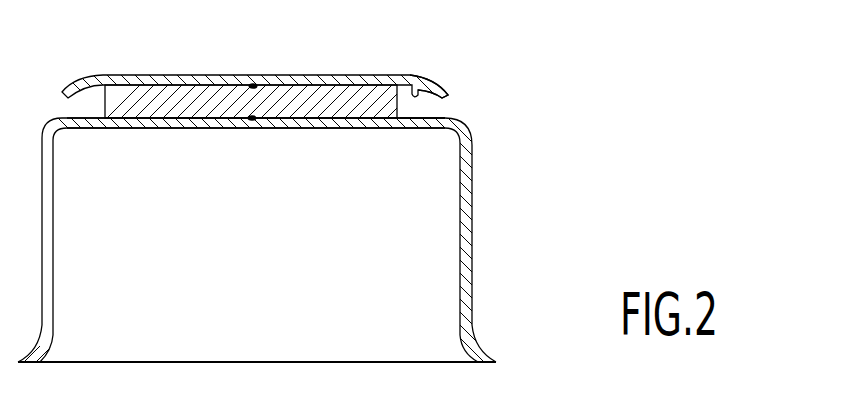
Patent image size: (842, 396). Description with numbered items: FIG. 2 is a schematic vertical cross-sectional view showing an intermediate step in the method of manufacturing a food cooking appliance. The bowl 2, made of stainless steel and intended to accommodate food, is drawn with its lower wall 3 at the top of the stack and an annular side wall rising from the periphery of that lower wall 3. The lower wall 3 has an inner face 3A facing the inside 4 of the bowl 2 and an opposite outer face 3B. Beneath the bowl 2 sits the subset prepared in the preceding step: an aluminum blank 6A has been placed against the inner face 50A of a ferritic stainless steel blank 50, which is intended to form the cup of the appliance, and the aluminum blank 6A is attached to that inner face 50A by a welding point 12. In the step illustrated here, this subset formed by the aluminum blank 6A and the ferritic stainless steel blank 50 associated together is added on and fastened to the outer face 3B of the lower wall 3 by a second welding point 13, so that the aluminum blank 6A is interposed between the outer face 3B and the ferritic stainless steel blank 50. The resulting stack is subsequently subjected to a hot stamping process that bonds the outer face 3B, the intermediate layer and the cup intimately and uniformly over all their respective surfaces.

The bowl 2 is at (472, 252).
The lower wall 3 is at (132, 124).
The inner face 3A is at (205, 130).
The outer face 3B is at (424, 109).
The inside of the bowl 4 is at (265, 267).
The aluminum blank 6A is at (325, 98).
The welding point 12 is at (253, 84).
The welding point 13 is at (259, 121).
The ferritic stainless steel blank 50 is at (106, 76).
The inner face 50A is at (421, 88).